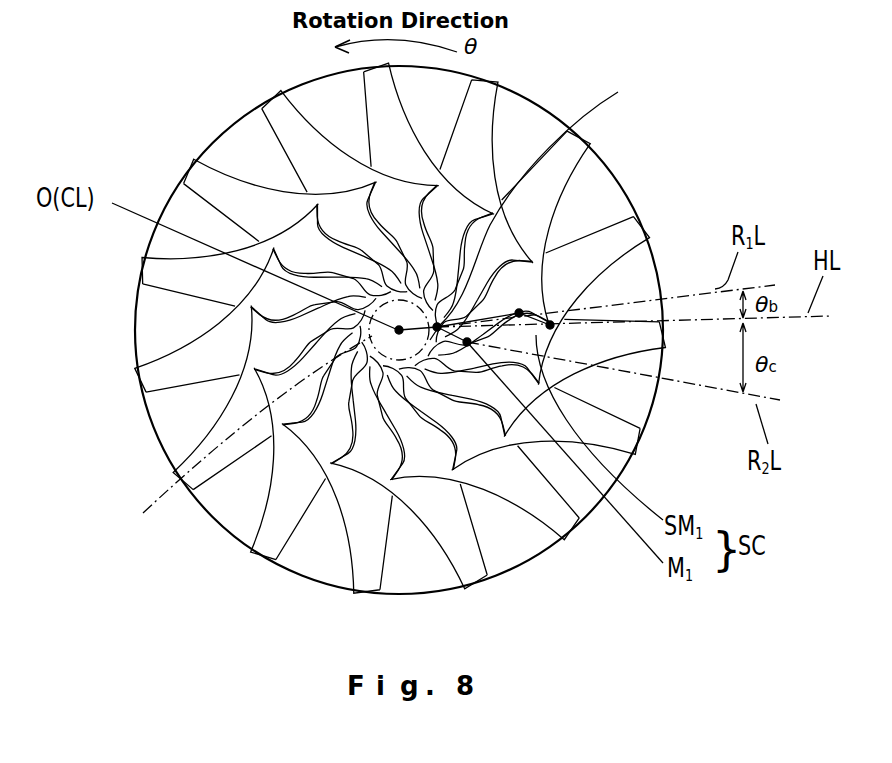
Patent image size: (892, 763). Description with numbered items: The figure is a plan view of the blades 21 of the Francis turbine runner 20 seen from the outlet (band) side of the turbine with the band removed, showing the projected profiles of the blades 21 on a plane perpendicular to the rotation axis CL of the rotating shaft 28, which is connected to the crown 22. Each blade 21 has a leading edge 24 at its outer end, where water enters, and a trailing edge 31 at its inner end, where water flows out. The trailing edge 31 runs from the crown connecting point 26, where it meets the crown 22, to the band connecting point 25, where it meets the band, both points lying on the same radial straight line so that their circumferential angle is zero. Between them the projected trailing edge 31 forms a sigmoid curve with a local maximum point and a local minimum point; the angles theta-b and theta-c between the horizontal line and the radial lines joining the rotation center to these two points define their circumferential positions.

The Francis turbine runner 20 is at (567, 66).
The blade 21 is at (438, 520).
The crown 22 is at (620, 178).
The leading edge 24 is at (645, 239).
The band connecting point 25 is at (642, 390).
The crown connecting point 26 is at (536, 202).
The rotating shaft 28 is at (239, 438).
The trailing edge 31 is at (466, 362).